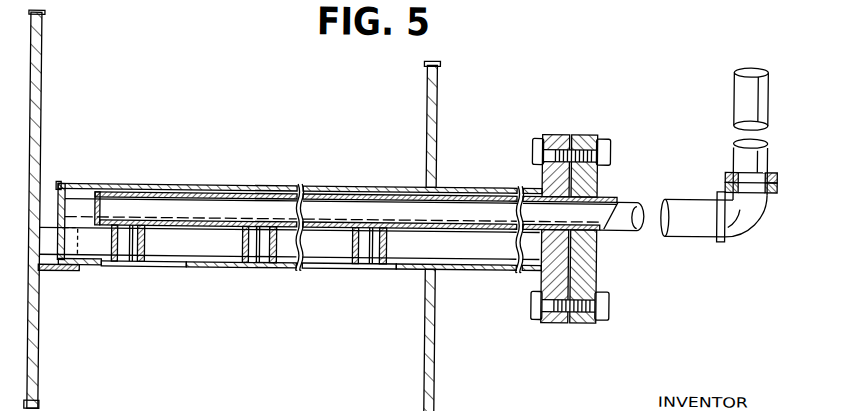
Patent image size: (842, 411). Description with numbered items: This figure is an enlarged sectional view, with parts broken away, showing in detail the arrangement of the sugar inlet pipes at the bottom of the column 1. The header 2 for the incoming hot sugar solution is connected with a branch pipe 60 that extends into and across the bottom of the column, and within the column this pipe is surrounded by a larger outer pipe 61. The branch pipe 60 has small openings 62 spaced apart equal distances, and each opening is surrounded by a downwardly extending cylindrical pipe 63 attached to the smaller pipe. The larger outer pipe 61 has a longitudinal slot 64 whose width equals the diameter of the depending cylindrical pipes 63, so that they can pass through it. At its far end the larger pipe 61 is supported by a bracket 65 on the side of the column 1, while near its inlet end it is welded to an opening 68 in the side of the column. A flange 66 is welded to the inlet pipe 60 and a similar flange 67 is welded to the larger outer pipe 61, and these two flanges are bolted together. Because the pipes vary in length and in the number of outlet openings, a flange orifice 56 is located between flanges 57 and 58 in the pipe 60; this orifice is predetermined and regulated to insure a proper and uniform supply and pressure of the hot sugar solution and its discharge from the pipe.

The column 1 is at (45, 96).
The header 2 is at (742, 87).
The flange orifice 56 is at (725, 182).
The flange 57 is at (719, 191).
The flange 58 is at (728, 170).
The branch pipe 60 is at (618, 200).
The outer pipe 61 is at (246, 188).
The small opening 62 is at (130, 232).
The cylindrical pipe 63 is at (119, 264).
The longitudinal slot 64 is at (186, 268).
The bracket 65 is at (50, 273).
The flange 66 is at (586, 132).
The flange 67 is at (550, 132).
The opening 68 is at (439, 186).